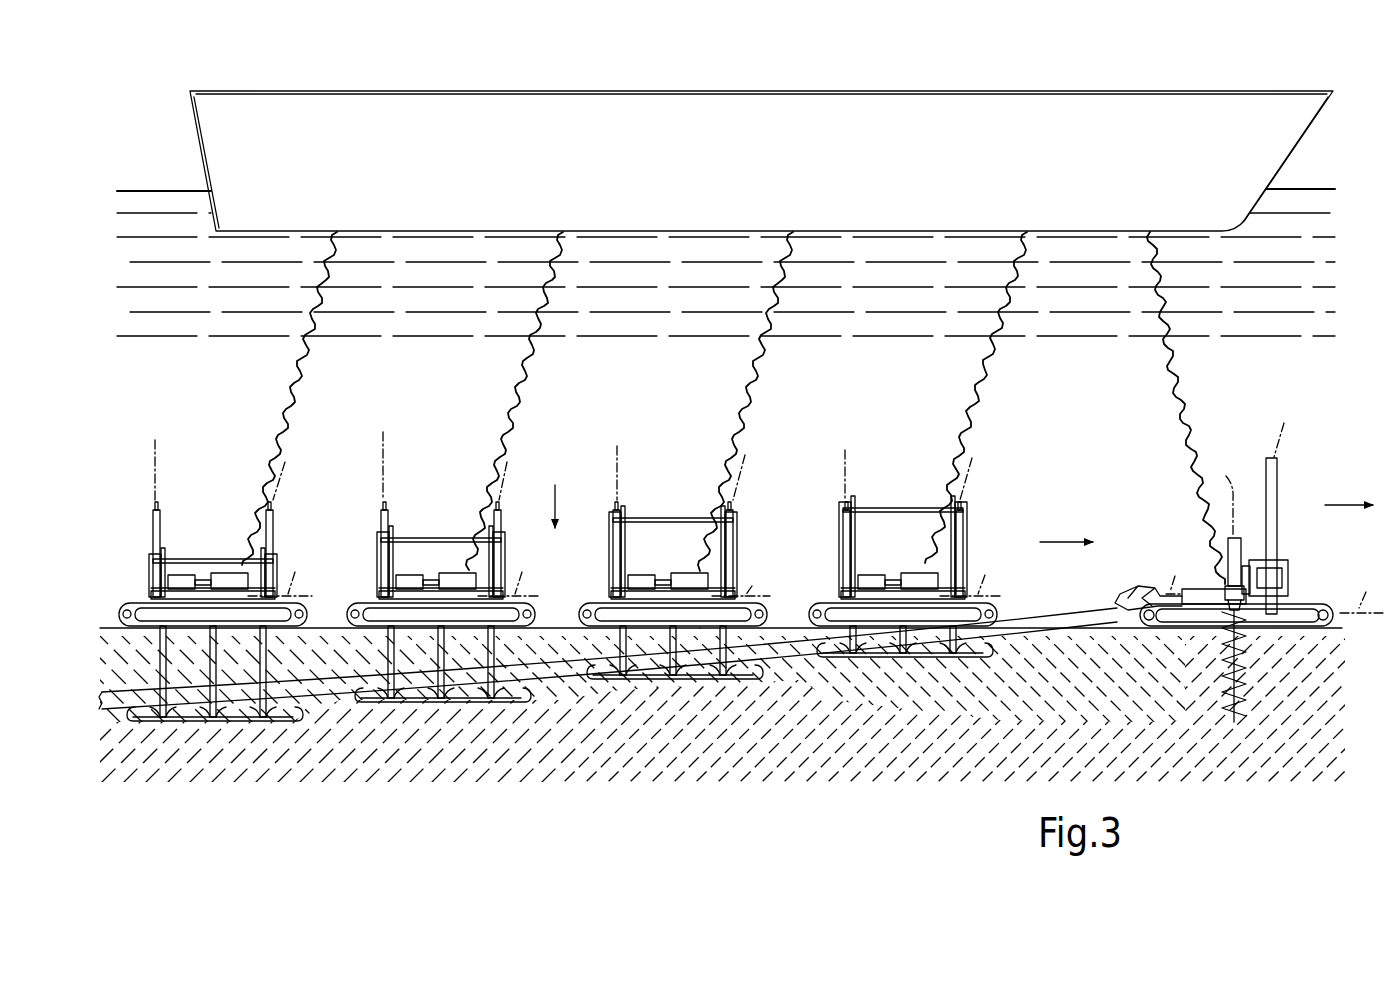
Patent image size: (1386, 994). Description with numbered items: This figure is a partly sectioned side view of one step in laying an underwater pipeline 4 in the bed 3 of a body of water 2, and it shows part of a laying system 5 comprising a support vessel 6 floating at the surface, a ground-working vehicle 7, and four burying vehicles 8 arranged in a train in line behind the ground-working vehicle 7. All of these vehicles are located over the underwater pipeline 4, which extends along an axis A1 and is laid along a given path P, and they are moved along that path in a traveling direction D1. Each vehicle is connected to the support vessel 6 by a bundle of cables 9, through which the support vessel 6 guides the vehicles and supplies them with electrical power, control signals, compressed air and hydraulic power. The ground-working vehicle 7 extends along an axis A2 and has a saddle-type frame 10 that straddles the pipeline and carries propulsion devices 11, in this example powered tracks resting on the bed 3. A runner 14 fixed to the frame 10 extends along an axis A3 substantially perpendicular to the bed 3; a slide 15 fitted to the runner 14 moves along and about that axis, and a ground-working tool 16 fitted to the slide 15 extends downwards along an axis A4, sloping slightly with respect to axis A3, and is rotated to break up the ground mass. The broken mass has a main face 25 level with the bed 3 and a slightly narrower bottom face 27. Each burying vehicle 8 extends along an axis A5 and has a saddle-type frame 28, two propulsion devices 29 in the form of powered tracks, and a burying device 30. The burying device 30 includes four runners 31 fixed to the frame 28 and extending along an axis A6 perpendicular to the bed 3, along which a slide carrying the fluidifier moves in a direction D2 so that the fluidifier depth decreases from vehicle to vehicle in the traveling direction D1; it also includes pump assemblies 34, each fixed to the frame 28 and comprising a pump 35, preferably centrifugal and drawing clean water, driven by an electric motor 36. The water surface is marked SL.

The body of water 2 is at (1268, 248).
The bed 3 is at (1307, 700).
The underwater pipeline 4 is at (775, 655).
The laying system 5 is at (575, 44).
The support vessel 6 is at (655, 105).
The ground-working vehicle 7 is at (1157, 484).
The burying vehicle 8 is at (218, 465).
The bundle of cables 9 is at (302, 357).
The saddle-type frame 10 is at (1207, 588).
The propulsion device 11 is at (1297, 605).
The runner 14 is at (1277, 494).
The slide 15 is at (1276, 566).
The ground-working tool 16 is at (1212, 690).
The main face 25 is at (106, 624).
The bottom face 27 is at (948, 712).
The saddle-type frame 28 is at (176, 595).
The propulsion device 29 is at (286, 614).
The burying device 30 is at (150, 663).
The runner 31 is at (152, 520).
The pump assembly 34 is at (207, 515).
The pump 35 is at (180, 576).
The electric motor 36 is at (228, 573).
The sea level SL is at (160, 185).
The axis A1 is at (1363, 588).
The axis A2 is at (1168, 571).
The axis A3 is at (1296, 426).
The axis A4 is at (1218, 492).
The axis A5 is at (624, 568).
The axis A6 is at (560, 452).
The traveling direction D1 is at (1066, 510).
The direction D2 is at (569, 491).
The path P is at (1345, 502).